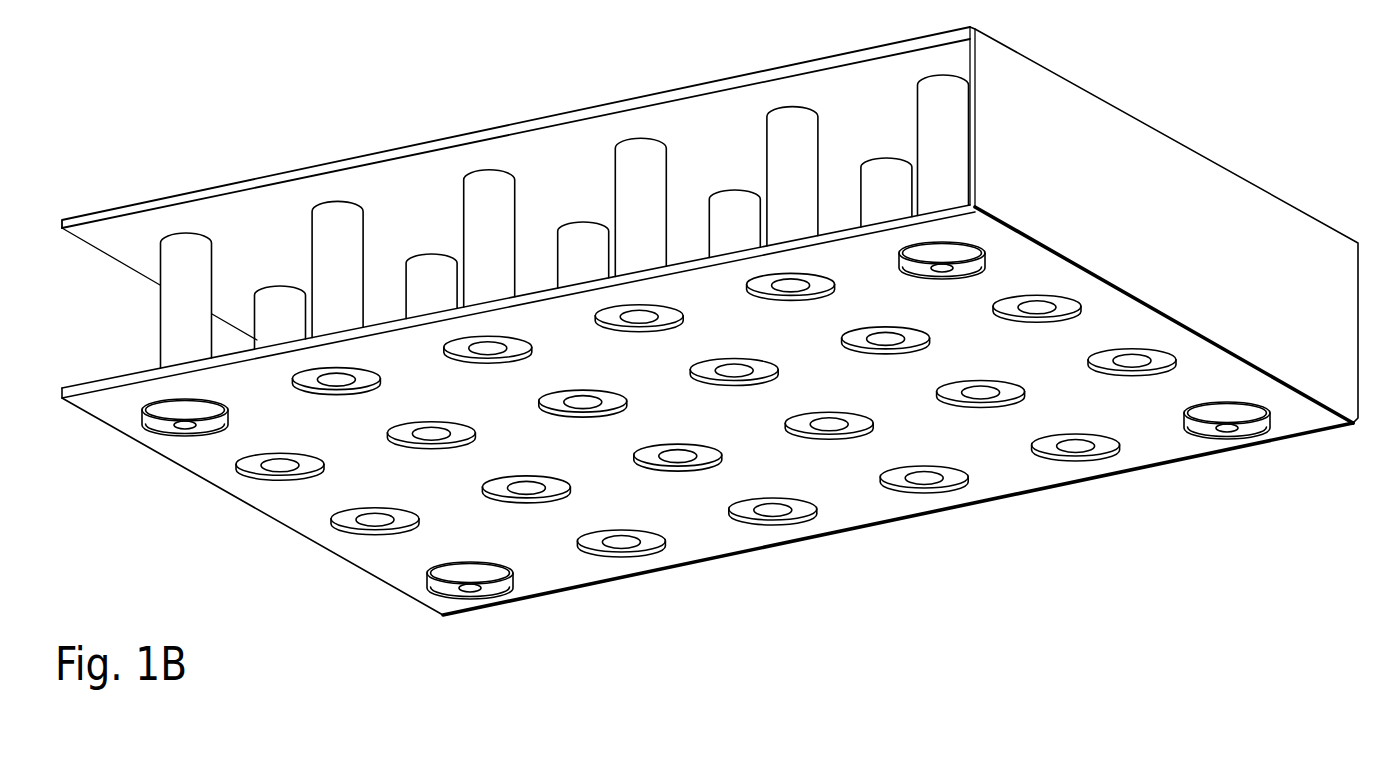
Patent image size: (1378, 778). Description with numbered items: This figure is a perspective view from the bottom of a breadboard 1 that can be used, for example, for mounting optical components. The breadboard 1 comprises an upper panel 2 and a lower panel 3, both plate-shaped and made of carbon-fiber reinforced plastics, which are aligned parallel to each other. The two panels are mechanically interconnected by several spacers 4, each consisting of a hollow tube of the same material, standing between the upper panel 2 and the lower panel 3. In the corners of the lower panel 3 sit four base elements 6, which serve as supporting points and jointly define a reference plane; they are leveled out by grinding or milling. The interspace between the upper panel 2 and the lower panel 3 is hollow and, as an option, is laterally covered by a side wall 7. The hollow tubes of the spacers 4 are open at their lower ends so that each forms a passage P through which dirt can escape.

The breadboard 1 is at (1249, 118).
The upper panel 2 is at (319, 167).
The lower panel 3 is at (291, 512).
The spacer 4 is at (172, 327).
The base element 6 is at (445, 586).
The side wall 7 is at (1070, 113).
The passage P is at (923, 480).